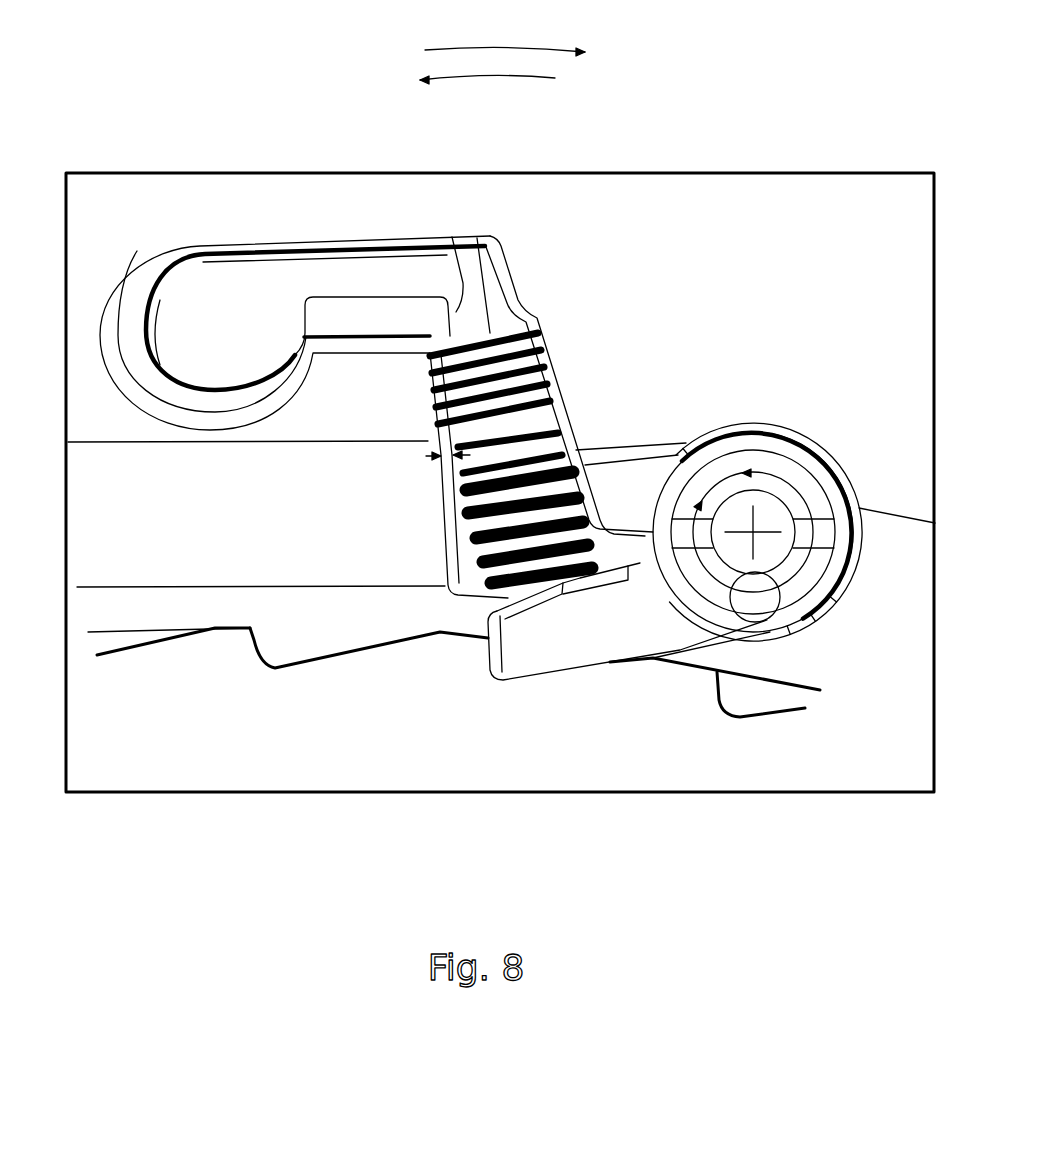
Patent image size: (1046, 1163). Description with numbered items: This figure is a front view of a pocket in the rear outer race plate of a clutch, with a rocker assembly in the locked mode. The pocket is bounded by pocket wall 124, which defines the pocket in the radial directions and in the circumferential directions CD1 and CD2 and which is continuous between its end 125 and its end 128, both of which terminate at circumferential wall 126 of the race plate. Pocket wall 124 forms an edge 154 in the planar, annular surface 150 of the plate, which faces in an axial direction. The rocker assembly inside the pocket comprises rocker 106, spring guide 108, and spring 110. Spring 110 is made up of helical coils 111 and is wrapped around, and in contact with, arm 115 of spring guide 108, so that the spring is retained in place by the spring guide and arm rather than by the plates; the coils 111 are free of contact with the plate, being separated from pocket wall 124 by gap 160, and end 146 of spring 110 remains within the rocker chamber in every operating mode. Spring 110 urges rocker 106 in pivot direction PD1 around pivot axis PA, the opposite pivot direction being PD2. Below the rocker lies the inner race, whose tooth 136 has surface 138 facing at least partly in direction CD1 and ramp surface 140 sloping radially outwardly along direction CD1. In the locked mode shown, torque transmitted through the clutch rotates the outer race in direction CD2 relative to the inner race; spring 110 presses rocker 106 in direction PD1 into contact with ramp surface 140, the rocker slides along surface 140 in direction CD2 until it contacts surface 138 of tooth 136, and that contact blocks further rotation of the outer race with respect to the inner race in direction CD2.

The rocker 106 is at (704, 653).
The spring guide 108 is at (150, 372).
The spring 110 is at (553, 367).
The helical coils 111 is at (545, 430).
The arm 115 is at (548, 440).
The pocket wall 124 is at (172, 282).
The end 125 is at (740, 637).
The circumferential wall 126 is at (372, 593).
The end 128 is at (447, 593).
The tooth 136 is at (146, 634).
The surface 138 is at (262, 648).
The ramp surface 140 is at (110, 643).
The end 146 is at (490, 333).
The planar annular surface 150 is at (180, 537).
The edge 154 is at (302, 237).
The gap 160 is at (428, 458).
The pivot axis PA is at (760, 529).
The pivot direction PD1 is at (855, 538).
The pivot direction PD2 is at (829, 614).
The circumferential direction CD1 is at (497, 48).
The circumferential direction CD2 is at (530, 80).